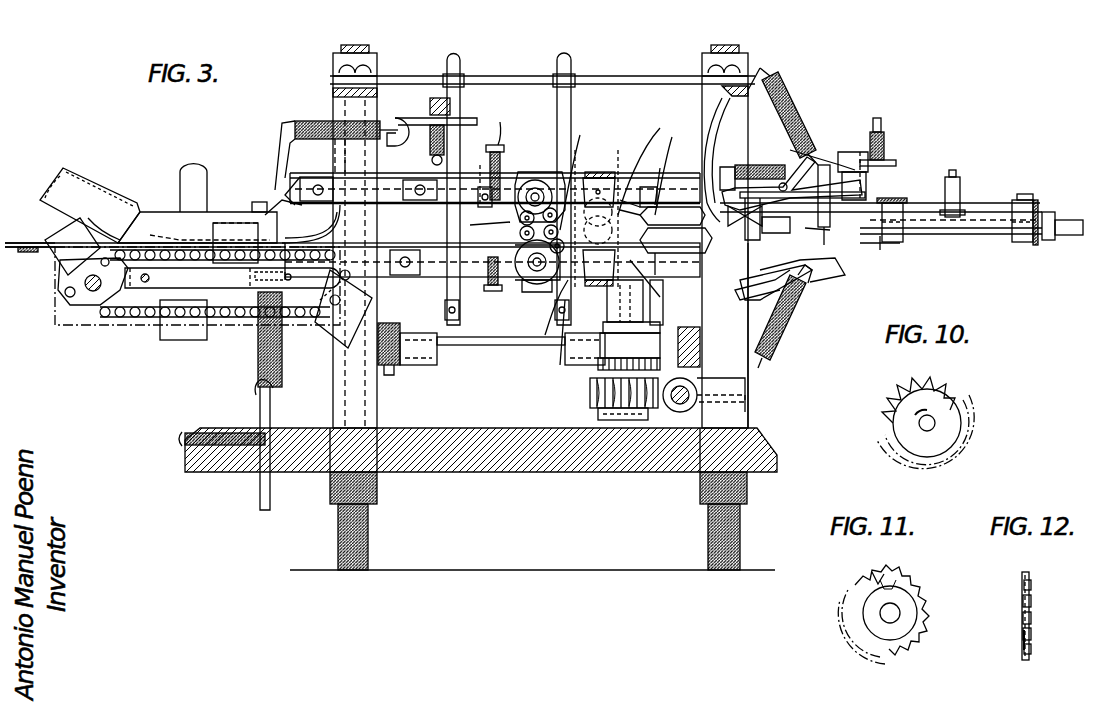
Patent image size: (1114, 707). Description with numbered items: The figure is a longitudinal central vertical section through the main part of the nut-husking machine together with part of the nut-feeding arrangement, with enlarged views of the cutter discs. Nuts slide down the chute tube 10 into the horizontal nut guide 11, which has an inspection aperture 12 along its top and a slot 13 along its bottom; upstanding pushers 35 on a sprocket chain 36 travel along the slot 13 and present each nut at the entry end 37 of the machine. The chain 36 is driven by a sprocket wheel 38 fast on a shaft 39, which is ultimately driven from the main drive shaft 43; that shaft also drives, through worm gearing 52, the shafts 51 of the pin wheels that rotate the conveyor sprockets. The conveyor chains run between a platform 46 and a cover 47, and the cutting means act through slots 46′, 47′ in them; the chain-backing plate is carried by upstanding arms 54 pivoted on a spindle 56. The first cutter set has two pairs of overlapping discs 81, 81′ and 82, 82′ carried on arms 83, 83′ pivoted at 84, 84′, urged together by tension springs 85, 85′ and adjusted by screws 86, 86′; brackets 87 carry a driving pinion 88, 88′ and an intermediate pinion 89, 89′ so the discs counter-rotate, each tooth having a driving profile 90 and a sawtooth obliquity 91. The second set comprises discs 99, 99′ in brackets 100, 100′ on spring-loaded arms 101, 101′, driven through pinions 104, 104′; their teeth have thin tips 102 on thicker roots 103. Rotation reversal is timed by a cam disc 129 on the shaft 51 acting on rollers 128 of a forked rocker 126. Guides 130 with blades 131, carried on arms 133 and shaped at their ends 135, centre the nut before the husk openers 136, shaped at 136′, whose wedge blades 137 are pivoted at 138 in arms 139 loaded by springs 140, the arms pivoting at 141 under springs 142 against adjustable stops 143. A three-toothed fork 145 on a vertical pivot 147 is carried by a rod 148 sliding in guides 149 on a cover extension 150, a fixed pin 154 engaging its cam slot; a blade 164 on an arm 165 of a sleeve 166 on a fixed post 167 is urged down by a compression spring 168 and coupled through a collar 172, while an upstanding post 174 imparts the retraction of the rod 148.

In FIG. 3, the chute tube 10 is at (88, 164).
In FIG. 3, the horizontal nut guide 11 is at (175, 210).
In FIG. 3, the inspection aperture 12 is at (235, 220).
In FIG. 3, the slot 13 is at (100, 240).
In FIG. 3, the pusher 35 is at (70, 225).
In FIG. 3, the sprocket chain 36 is at (155, 240).
In FIG. 3, the entry end 37 is at (186, 226).
In FIG. 3, the sprocket wheel 38 is at (88, 295).
In FIG. 3, the shaft 39 is at (105, 290).
In FIG. 3, the main drive shaft 43 is at (700, 397).
In FIG. 3, the platform 46 is at (808, 302).
In FIG. 3, the slot in platform 46′ is at (650, 242).
In FIG. 3, the cover 47 is at (300, 194).
In FIG. 3, the slot in cover 47′ is at (678, 162).
In FIG. 3, the shaft 51 is at (665, 347).
In FIG. 3, the worm gearing 52 is at (628, 420).
In FIG. 3, the upstanding arm 54 is at (430, 104).
In FIG. 3, the spindle 56 is at (445, 357).
In FIG. 3, the upper cutter disc 81 is at (518, 227).
In FIG. 3, the lower cutter disc 81′ is at (545, 242).
In FIG. 3, the upper cutter disc 82 is at (550, 172).
In FIG. 3, the lower cutter disc 82′ is at (560, 365).
In FIG. 3, the upper arm 83 is at (472, 172).
In FIG. 3, the lower arm 83′ is at (492, 300).
In FIG. 3, the pivot 84 is at (298, 182).
In FIG. 3, the pivot 84′ is at (318, 325).
In FIG. 3, the tension spring 85 is at (313, 121).
In FIG. 3, the tension spring 85′ is at (258, 354).
In FIG. 3, the adjusting screw 86 is at (494, 118).
In FIG. 3, the adjusting screw 86′ is at (485, 346).
In FIG. 3, the bracket 87 is at (474, 223).
In FIG. 3, the driving pinion 88 is at (530, 180).
In FIG. 3, the driving pinion 88′ is at (540, 285).
In FIG. 3, the intermediate pinion 89 is at (582, 167).
In FIG. 3, the intermediate pinion 89′ is at (545, 335).
In FIG. 10, the driving tooth profile 90 is at (898, 392).
In FIG. 10, the sawtooth obliquity 91 is at (893, 396).
In FIG. 3, the upper cutter disc 99 is at (612, 200).
In FIG. 11, the upper cutter disc 99 is at (868, 622).
In FIG. 12, the upper cutter disc 99 is at (1030, 607).
In FIG. 3, the lower cutter disc 99′ is at (612, 217).
In FIG. 3, the bracket 100 is at (602, 172).
In FIG. 3, the bracket 100′ is at (615, 272).
In FIG. 3, the spring-loaded arm 101 is at (440, 178).
In FIG. 3, the spring-loaded arm 101′ is at (395, 250).
In FIG. 11, the cutting tip 102 is at (900, 578).
In FIG. 12, the cutting tip 102 is at (1028, 574).
In FIG. 11, the root portion 103 is at (876, 572).
In FIG. 12, the root portion 103 is at (1022, 617).
In FIG. 3, the pinion 104 is at (638, 159).
In FIG. 3, the pinion 104′ is at (672, 289).
In FIG. 3, the forked rocker 126 is at (700, 342).
In FIG. 3, the roller 128 is at (660, 328).
In FIG. 3, the cam disc 129 is at (770, 358).
In FIG. 3, the longitudinal guide 130 is at (672, 215).
In FIG. 3, the blade 131 is at (700, 253).
In FIG. 3, the pivotally mounted arm 133 is at (684, 175).
In FIG. 3, the guide end 135 is at (650, 217).
In FIG. 3, the husk opener 136 is at (715, 140).
In FIG. 3, the shaped end of opener 136′ is at (724, 135).
In FIG. 3, the shouldered blade 137 is at (755, 223).
In FIG. 3, the pivot 138 is at (765, 165).
In FIG. 3, the arm 139 is at (805, 170).
In FIG. 3, the tension spring 140 is at (798, 150).
In FIG. 3, the pivot 141 is at (880, 200).
In FIG. 3, the spring 142 is at (793, 102).
In FIG. 3, the adjustable stop 143 is at (865, 196).
In FIG. 3, the three-toothed fork 145 is at (810, 237).
In FIG. 3, the vertical pivot 147 is at (838, 282).
In FIG. 3, the rod 148 is at (1005, 230).
In FIG. 3, the guide 149 is at (905, 232).
In FIG. 3, the cover extension 150 is at (1025, 194).
In FIG. 3, the fixed pin 154 is at (895, 252).
In FIG. 3, the blade 164 is at (830, 232).
In FIG. 3, the arm 165 is at (870, 181).
In FIG. 3, the sleeve 166 is at (868, 162).
In FIG. 3, the fixed post 167 is at (877, 118).
In FIG. 3, the compression spring 168 is at (892, 129).
In FIG. 3, the collar 172 is at (872, 160).
In FIG. 3, the upstanding post 174 is at (962, 192).